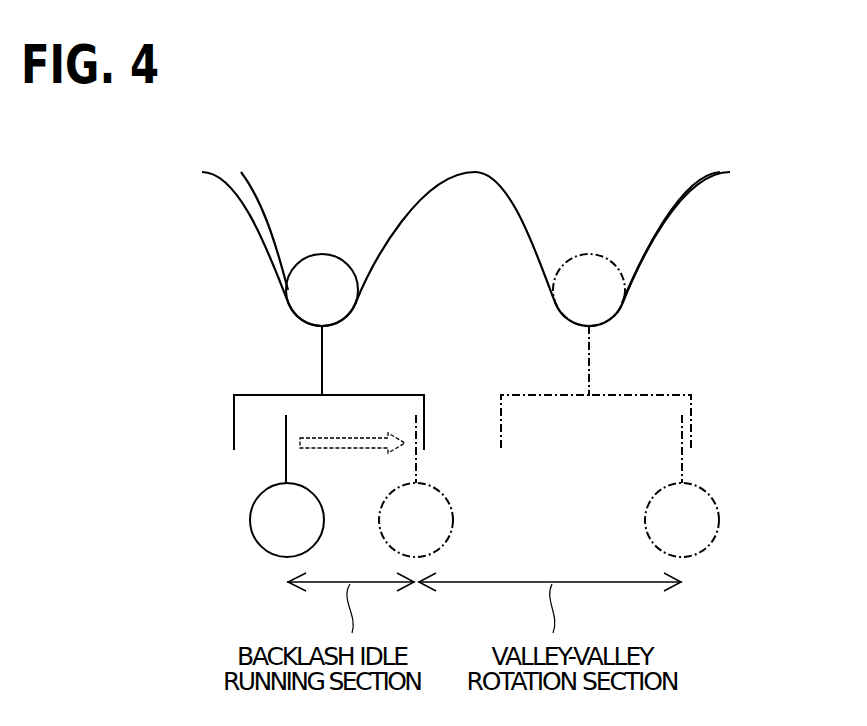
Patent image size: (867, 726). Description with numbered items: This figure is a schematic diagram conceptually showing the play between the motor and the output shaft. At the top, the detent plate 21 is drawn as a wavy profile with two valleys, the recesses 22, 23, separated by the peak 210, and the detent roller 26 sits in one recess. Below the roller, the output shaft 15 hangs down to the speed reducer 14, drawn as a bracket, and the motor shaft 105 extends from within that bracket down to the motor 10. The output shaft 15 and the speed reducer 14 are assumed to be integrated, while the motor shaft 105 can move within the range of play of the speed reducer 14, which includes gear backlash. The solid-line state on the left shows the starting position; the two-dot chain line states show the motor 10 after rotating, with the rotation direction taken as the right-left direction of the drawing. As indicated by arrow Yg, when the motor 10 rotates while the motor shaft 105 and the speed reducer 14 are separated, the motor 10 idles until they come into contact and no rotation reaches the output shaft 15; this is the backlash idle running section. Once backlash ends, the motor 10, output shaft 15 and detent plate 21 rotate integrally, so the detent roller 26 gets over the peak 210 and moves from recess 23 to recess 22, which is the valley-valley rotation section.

The detent plate 21 is at (240, 178).
The recess 22 is at (668, 252).
The recess 23 is at (256, 244).
The peak 210 is at (476, 172).
The detent roller 26 is at (322, 254).
The output shaft 15 is at (321, 362).
The speed reducer 14 is at (233, 428).
The motor shaft 105 is at (285, 468).
The motor 10 is at (250, 520).
The arrow Yg is at (361, 437).